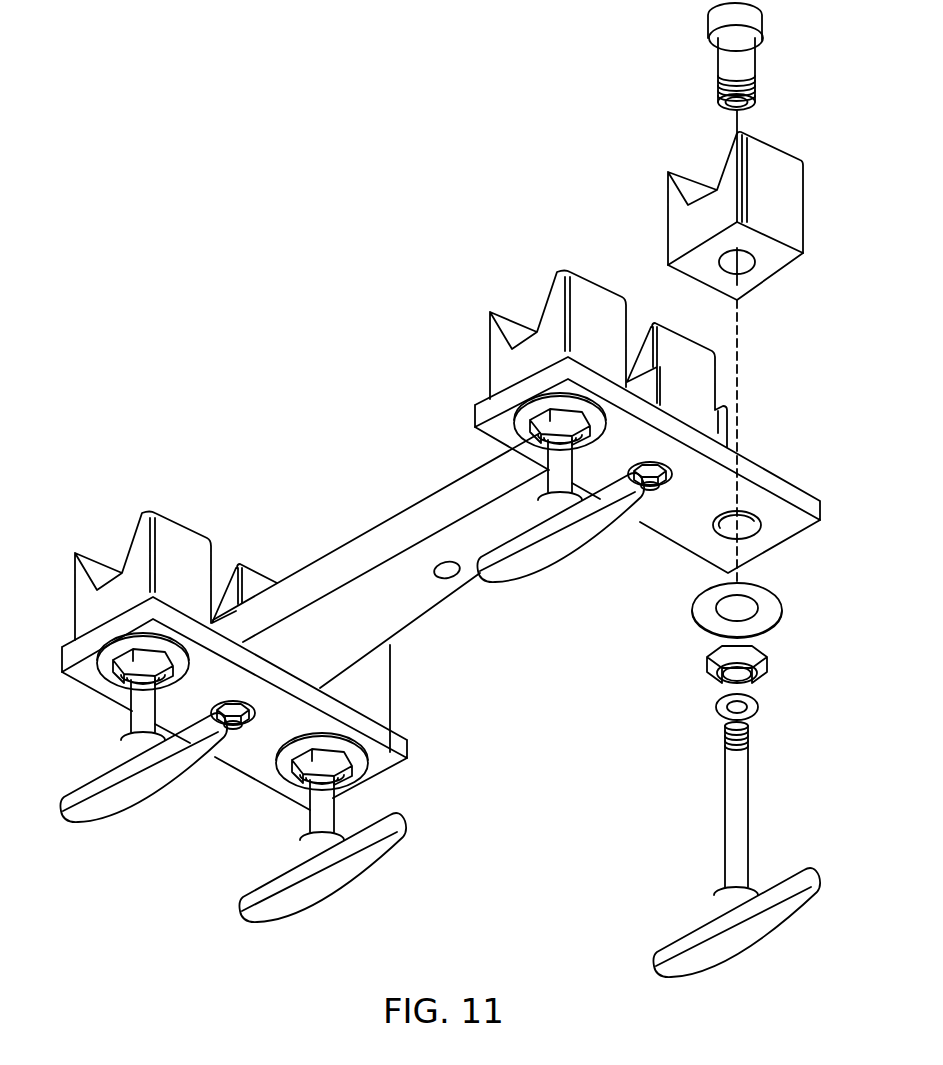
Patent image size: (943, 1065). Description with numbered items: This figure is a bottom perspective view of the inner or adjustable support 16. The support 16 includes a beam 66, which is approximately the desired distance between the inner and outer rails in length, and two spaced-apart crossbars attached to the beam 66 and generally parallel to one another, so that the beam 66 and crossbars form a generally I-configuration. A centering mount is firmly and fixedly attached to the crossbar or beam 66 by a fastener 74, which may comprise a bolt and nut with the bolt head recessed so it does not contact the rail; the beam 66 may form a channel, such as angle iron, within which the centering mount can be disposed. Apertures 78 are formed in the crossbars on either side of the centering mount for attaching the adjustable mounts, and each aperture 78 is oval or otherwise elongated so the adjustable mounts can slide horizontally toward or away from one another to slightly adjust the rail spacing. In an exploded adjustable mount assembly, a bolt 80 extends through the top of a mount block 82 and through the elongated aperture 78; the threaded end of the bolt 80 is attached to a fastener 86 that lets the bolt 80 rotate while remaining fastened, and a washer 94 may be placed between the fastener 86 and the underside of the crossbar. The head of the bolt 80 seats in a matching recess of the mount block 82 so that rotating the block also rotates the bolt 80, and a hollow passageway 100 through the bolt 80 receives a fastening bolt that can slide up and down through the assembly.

The inner or adjustable support 16 is at (440, 597).
The beam 66 is at (422, 613).
The fastener 74 is at (655, 492).
The aperture 78 is at (752, 524).
The bolt 80 is at (702, 59).
The mount block 82 is at (797, 190).
The fastener 86 is at (712, 673).
The washer 94 is at (782, 624).
The hollow passageway 100 is at (727, 105).